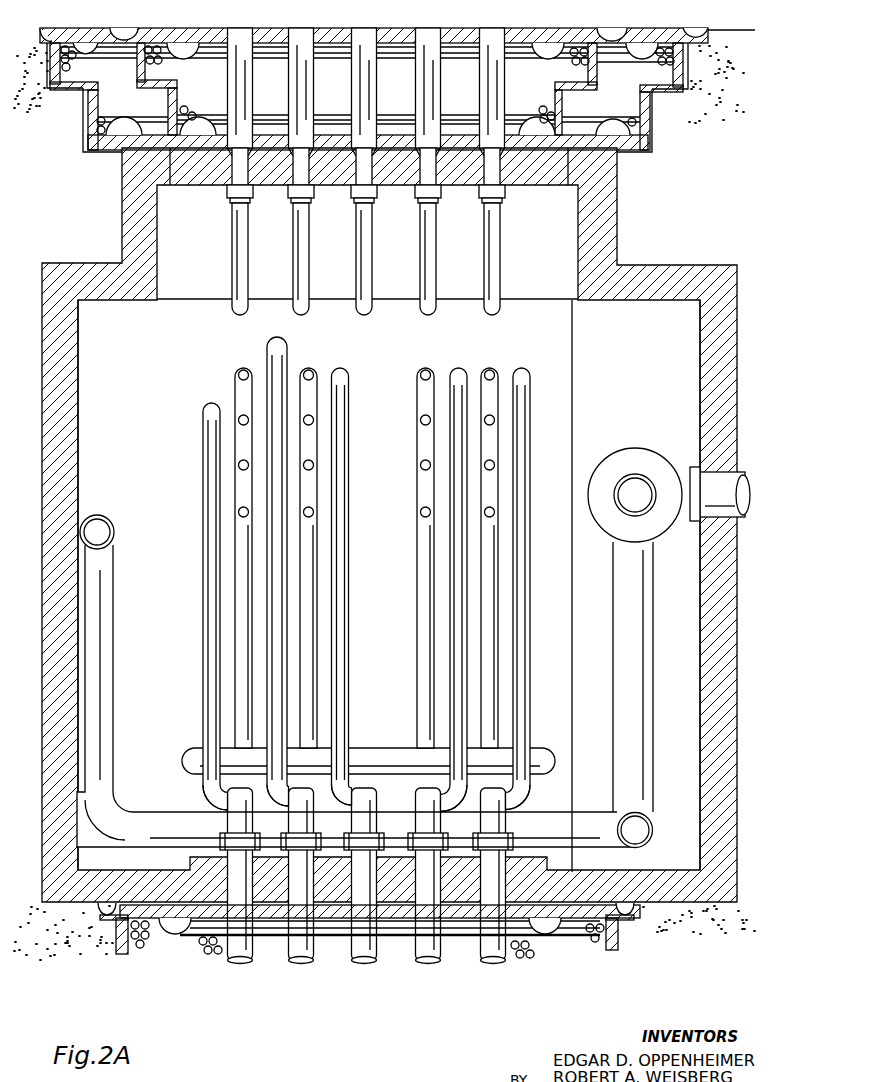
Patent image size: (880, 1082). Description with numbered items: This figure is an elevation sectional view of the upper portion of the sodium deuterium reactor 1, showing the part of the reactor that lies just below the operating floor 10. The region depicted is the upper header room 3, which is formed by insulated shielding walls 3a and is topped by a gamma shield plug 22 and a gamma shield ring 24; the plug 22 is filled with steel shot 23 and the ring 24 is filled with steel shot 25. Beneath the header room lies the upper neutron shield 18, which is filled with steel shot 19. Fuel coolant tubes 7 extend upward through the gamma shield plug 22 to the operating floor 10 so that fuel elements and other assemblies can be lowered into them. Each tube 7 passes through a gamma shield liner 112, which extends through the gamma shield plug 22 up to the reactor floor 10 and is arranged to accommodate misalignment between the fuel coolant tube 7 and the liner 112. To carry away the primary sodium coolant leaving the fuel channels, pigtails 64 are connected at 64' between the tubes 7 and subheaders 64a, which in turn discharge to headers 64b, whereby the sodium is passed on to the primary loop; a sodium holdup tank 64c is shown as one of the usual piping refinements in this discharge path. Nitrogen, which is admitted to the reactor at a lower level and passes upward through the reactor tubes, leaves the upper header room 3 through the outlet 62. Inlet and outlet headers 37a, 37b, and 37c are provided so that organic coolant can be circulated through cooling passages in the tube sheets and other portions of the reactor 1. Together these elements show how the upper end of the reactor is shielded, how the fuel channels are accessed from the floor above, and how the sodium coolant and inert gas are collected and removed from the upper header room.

The sodium deuterium reactor 1 is at (371, 975).
The upper header room 3 is at (107, 297).
The insulated shielding walls 3a is at (204, 186).
The fuel coolant tubes 7 is at (484, 318).
The operating floor 10 is at (672, 28).
The upper neutron shield 18 is at (155, 979).
The steel shot 19 is at (212, 950).
The gamma shield plug 22 is at (515, 98).
The steel shot 23 is at (578, 60).
The gamma shield ring 24 is at (630, 100).
The steel shot 25 is at (660, 63).
The inlet and outlet header 37a is at (203, 58).
The inlet and outlet header 37b is at (130, 115).
The inlet and outlet header 37c is at (181, 934).
The outlet 62 is at (722, 494).
The pigtails 64 is at (393, 592).
The pigtail connection 64' is at (356, 760).
The subheaders 64a is at (366, 558).
The headers 64b is at (113, 577).
The sodium holdup tank 64c is at (643, 448).
The gamma shield liner 112 is at (351, 100).